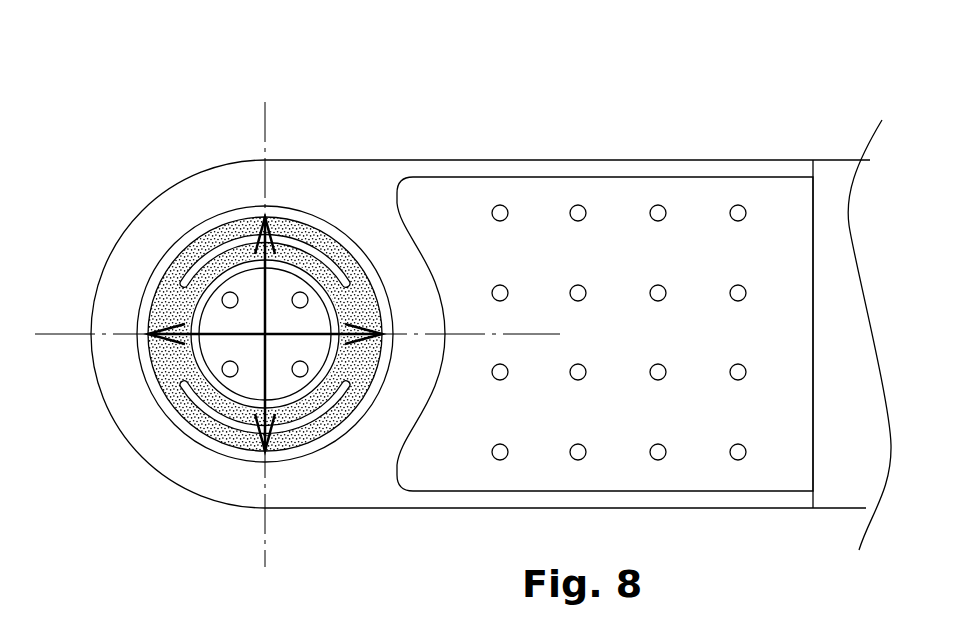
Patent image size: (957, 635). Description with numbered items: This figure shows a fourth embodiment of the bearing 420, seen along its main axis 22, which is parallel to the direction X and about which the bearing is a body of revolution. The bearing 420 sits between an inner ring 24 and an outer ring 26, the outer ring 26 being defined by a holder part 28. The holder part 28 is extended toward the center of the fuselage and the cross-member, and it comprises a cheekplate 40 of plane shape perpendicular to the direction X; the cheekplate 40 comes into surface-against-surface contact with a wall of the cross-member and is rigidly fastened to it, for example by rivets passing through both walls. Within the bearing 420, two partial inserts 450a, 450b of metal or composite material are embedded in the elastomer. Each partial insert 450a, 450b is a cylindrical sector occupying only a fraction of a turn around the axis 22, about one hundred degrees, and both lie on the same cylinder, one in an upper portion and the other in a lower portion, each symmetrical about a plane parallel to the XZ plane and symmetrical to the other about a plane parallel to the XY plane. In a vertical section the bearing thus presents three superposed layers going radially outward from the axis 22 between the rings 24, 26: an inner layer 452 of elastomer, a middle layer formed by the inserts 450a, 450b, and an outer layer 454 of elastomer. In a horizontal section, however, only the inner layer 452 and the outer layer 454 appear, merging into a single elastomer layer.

The main axis 22 is at (268, 338).
The inner ring 24 is at (222, 268).
The outer ring 26 is at (177, 250).
The holder part 28 is at (515, 167).
The cheekplate 40 is at (605, 242).
The bearing 420 is at (315, 228).
The partial insert 450a is at (248, 223).
The partial insert 450b is at (183, 387).
The inner layer 452 is at (200, 408).
The outer layer 454 is at (183, 262).